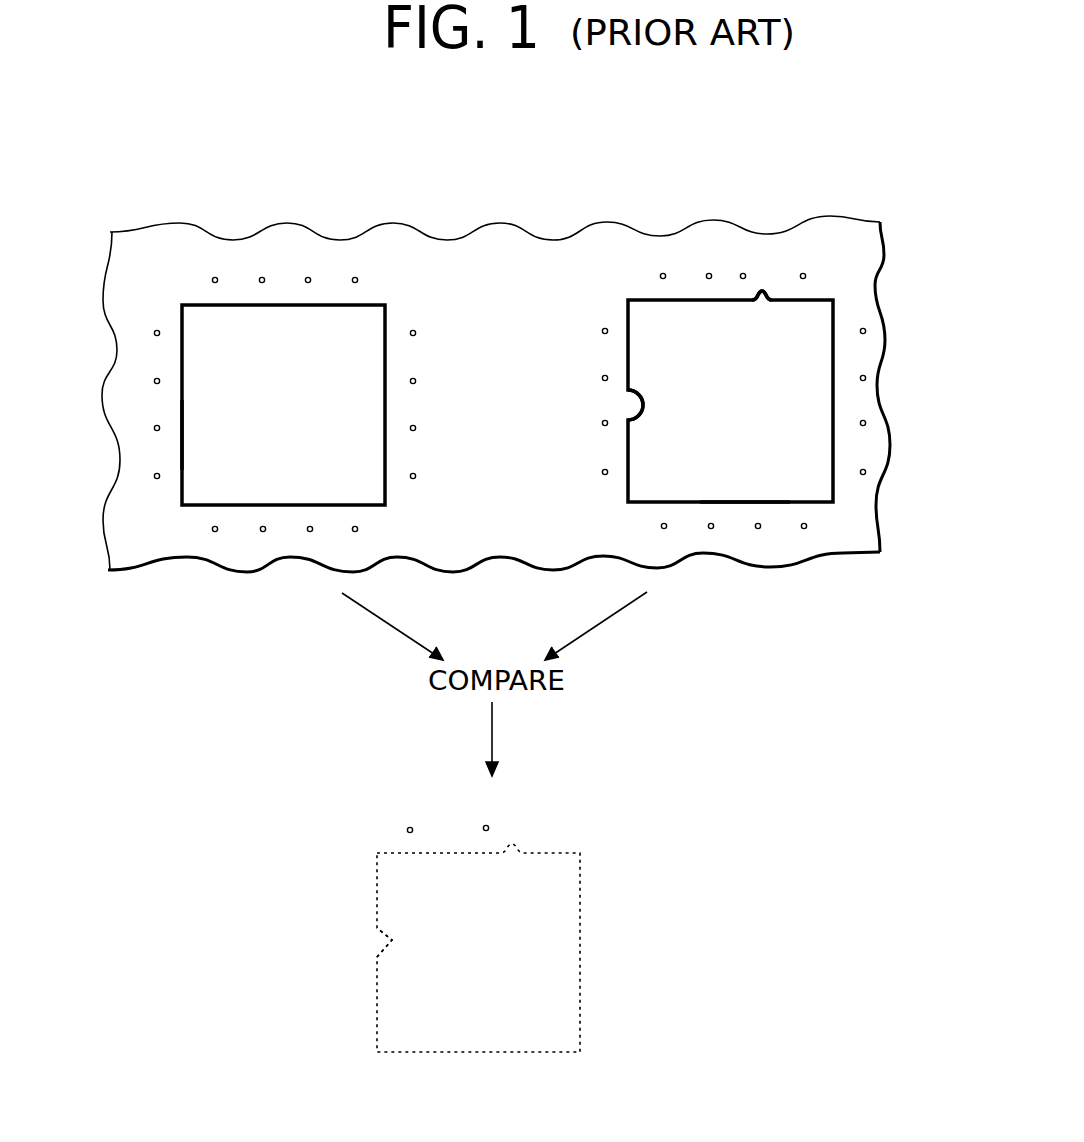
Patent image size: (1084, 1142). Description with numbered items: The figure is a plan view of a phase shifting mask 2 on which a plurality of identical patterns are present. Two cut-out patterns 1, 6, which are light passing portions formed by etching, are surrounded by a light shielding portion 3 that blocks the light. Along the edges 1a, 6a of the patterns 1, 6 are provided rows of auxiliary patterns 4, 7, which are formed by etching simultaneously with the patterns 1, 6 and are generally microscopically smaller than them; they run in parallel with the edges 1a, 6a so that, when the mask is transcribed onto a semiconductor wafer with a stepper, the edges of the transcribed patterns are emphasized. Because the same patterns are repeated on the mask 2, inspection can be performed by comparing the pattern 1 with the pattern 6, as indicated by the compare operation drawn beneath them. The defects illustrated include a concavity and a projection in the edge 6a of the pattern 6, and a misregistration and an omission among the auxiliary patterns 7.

The cut-out pattern 1 is at (182, 397).
The edge 1a is at (182, 462).
The phase shifting mask 2 is at (137, 283).
The light shielding portion 3 is at (170, 545).
The auxiliary pattern 4 is at (416, 380).
The cut-out pattern 6 is at (833, 398).
The edge 6a is at (732, 500).
The auxiliary pattern 7 is at (866, 472).